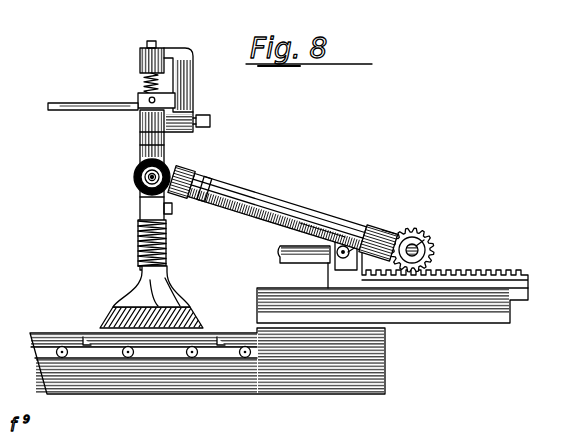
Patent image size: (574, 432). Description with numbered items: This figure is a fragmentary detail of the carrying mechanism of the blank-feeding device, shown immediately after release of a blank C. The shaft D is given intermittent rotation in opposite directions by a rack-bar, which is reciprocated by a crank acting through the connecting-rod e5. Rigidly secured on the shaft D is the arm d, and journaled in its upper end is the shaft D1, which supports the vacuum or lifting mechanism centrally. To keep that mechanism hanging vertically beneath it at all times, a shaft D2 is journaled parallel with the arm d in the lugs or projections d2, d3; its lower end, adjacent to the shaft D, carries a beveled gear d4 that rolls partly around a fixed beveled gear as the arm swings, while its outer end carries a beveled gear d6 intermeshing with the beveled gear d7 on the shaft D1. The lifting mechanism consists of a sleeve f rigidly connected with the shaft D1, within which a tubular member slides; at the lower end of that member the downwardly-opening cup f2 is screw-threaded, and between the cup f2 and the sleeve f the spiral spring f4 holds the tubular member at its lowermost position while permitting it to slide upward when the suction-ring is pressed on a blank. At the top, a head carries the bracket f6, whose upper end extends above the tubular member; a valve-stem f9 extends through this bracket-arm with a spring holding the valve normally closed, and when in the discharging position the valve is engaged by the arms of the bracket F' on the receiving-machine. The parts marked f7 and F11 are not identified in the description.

The blanks C is at (112, 345).
The bracket F' is at (306, 285).
The shaft D is at (428, 238).
The connecting-rod e5 is at (280, 261).
The shaft D2 is at (286, 219).
The lug d2 is at (206, 188).
The arm d is at (335, 223).
The beveled gear d6 is at (184, 173).
The lug d3 is at (371, 228).
The beveled gear d4 is at (393, 238).
The sleeve f is at (140, 208).
The spiral spring f4 is at (138, 249).
The cup f2 is at (188, 294).
The beveled gear d7 is at (141, 166).
The shaft D1 is at (134, 181).
The bracket f6 is at (192, 88).
The valve-stem f9 is at (143, 74).
The clamp block f7 is at (140, 98).
The blade F11 is at (93, 96).